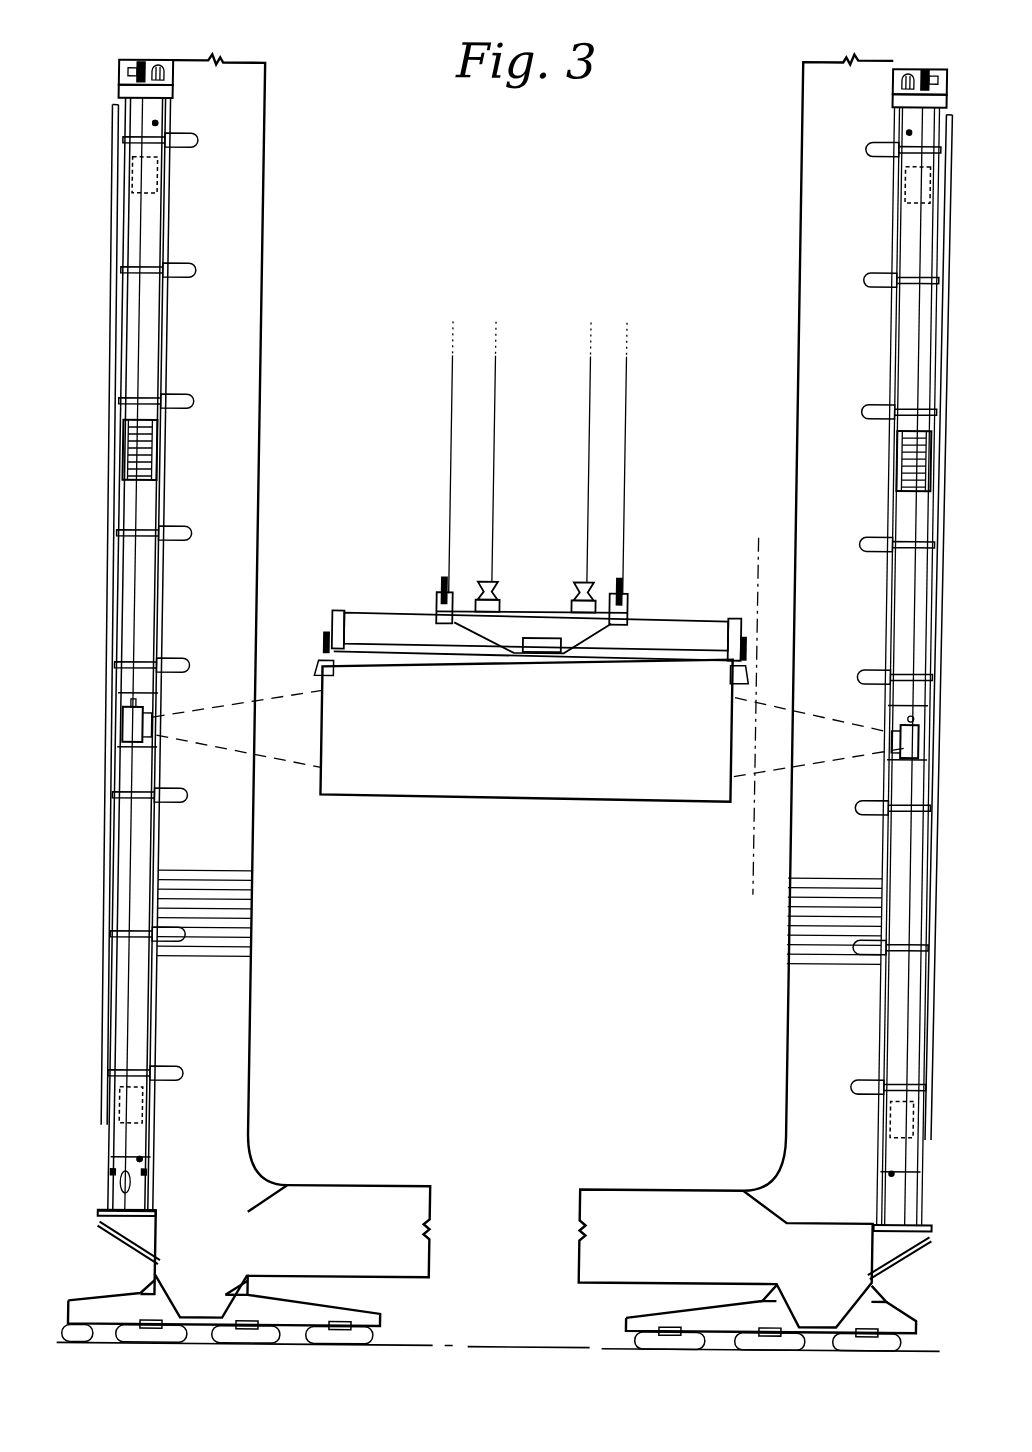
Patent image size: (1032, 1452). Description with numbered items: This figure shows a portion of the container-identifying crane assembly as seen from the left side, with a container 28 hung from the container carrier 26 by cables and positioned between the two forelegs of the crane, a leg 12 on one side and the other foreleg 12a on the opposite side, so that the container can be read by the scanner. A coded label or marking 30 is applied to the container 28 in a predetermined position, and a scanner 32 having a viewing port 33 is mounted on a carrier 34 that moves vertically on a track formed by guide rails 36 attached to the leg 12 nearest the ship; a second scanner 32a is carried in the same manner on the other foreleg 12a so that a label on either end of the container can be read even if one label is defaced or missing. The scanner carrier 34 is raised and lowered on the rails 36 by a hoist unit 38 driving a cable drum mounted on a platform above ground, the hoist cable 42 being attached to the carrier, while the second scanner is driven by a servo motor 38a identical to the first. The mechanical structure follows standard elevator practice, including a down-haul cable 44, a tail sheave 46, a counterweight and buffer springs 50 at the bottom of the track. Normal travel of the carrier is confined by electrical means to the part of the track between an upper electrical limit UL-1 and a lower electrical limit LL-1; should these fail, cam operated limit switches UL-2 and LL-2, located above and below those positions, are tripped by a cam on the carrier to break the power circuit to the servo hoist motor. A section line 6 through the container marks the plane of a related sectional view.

The section line 6- 6 is at (710, 888).
The leg 12 is at (256, 977).
The right lifting tower 12a is at (784, 1002).
The container carrier 26 is at (410, 616).
The container 28 is at (513, 797).
The coded label or marking 30 is at (312, 720).
The scanner 32 is at (124, 722).
The sensing device (right) 32a is at (908, 748).
The viewing port 33 is at (152, 728).
The carrier 34 is at (137, 704).
The guide rails 36 is at (153, 605).
The hoist unit 38 is at (152, 68).
The servo motor 38a is at (897, 70).
The hoist cable 42 is at (137, 243).
The down-haul cable 44 is at (136, 845).
The tail sheave 46 is at (138, 1186).
The buffer springs 50 is at (122, 1177).
The upper electrical limit UL-1 is at (186, 170).
The upper cam operated limit switch UL-2 is at (150, 126).
The lower electrical limit LL-1 is at (180, 1110).
The lower cam operated limit switch LL-2 is at (150, 1162).